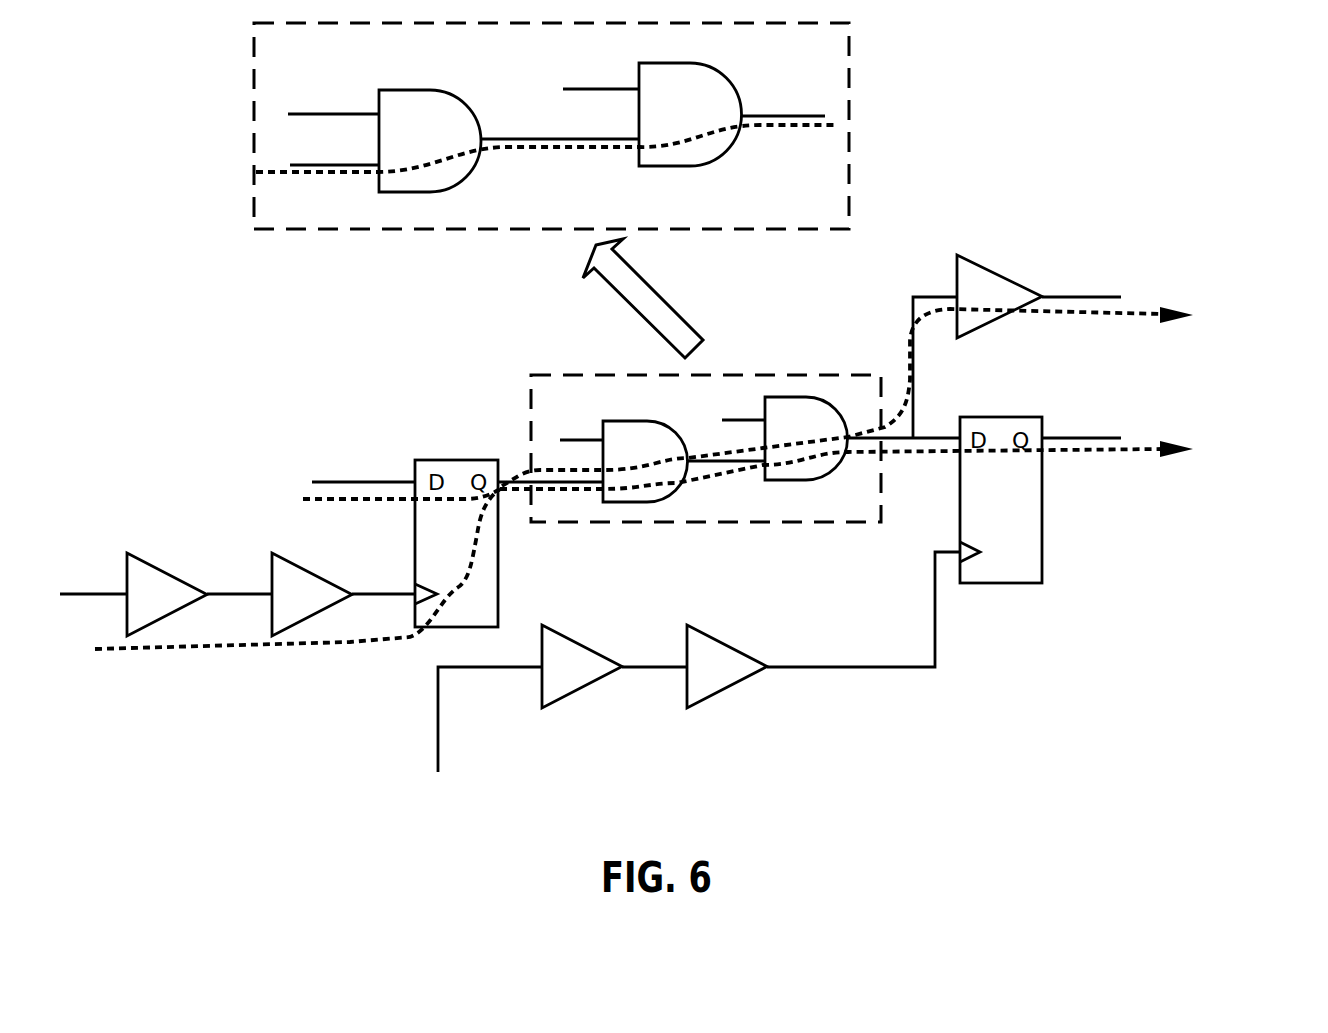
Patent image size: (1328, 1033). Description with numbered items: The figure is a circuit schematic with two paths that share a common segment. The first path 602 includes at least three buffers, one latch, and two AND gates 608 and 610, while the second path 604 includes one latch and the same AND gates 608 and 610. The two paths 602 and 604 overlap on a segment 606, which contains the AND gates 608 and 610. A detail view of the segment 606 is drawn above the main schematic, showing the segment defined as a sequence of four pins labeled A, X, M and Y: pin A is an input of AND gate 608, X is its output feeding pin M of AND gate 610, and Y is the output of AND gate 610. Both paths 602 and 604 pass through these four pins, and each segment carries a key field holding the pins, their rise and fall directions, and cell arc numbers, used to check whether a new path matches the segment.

The path 602 is at (902, 394).
The path 604 is at (902, 463).
The segment 606 is at (305, 175).
The AND gate 608 is at (572, 296).
The AND gate 610 is at (799, 290).